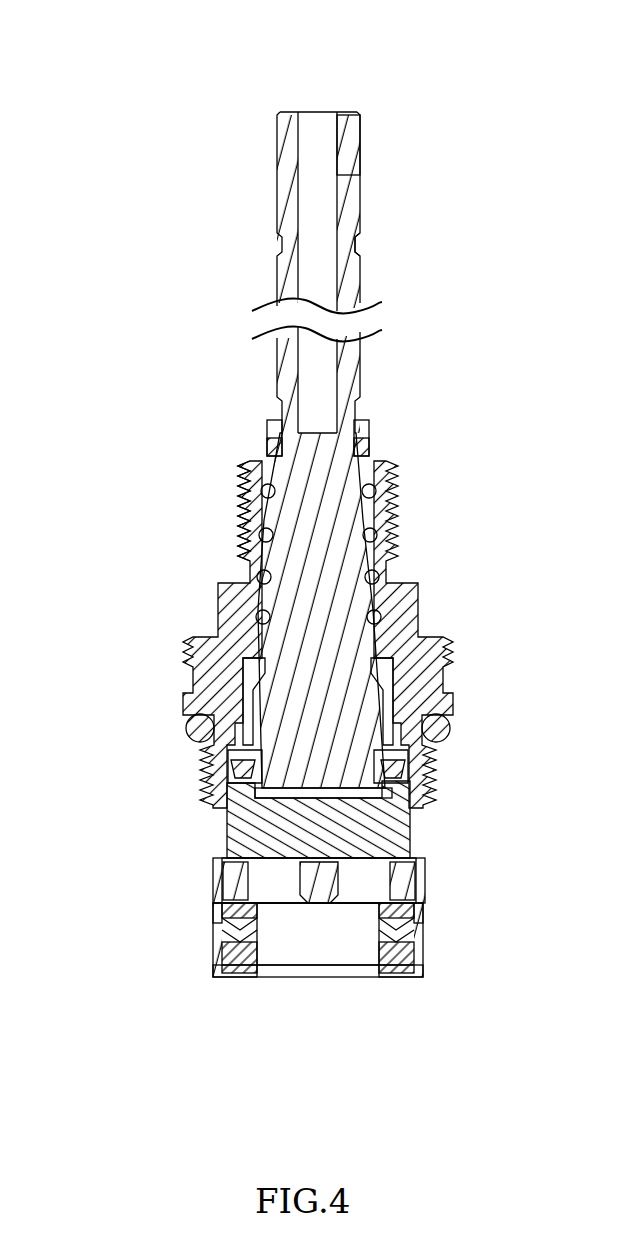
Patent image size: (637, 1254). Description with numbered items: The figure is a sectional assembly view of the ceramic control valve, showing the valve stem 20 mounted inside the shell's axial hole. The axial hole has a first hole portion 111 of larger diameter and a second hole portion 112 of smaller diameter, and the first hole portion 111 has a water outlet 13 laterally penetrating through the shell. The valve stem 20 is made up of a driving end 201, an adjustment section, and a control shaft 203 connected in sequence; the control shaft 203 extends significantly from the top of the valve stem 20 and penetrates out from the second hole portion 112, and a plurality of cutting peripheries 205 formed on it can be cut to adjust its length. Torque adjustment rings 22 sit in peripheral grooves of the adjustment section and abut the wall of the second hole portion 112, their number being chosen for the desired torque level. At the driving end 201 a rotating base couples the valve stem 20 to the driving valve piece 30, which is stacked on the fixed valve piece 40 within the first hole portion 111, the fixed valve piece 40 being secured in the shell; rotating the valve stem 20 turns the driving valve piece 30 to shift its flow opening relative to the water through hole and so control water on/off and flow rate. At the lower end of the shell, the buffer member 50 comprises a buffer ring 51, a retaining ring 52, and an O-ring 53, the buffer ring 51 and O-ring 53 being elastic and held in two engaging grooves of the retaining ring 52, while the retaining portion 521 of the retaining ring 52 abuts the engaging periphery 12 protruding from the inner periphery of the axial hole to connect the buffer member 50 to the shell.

The valve stem 20 is at (268, 174).
The control shaft 203 is at (343, 118).
The cutting peripheries 205 is at (362, 245).
The driving end 201 is at (268, 773).
The first hole portion 111 is at (198, 686).
The second hole portion 112 is at (248, 456).
The torque adjustment ring 22 is at (388, 530).
The driving valve piece 30 is at (412, 815).
The water outlet 13 is at (223, 830).
The fixed valve piece 40 is at (415, 875).
The buffer member 50 is at (414, 982).
The buffer ring 51 is at (418, 917).
The retaining ring 52 is at (423, 958).
The O-ring 53 is at (223, 968).
The engaging periphery 12 is at (224, 914).
The retaining portion 521 is at (223, 913).